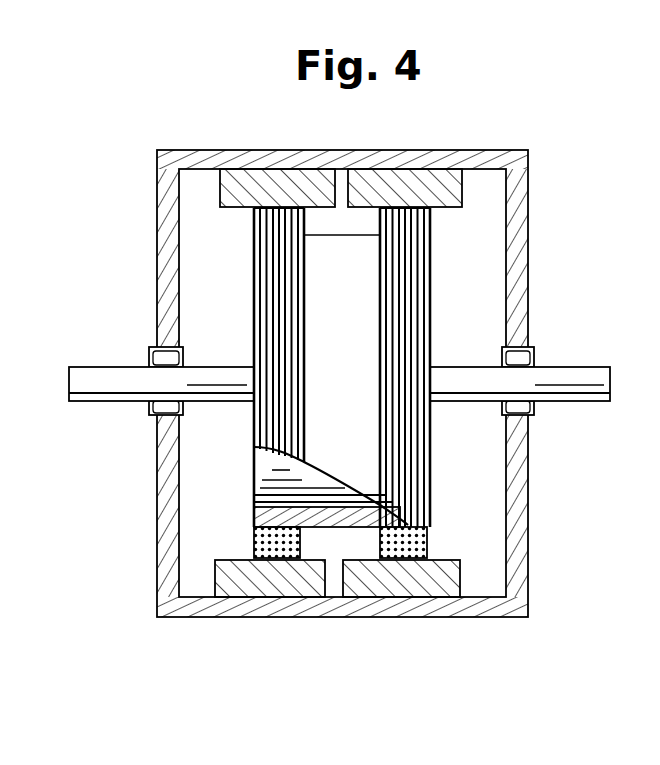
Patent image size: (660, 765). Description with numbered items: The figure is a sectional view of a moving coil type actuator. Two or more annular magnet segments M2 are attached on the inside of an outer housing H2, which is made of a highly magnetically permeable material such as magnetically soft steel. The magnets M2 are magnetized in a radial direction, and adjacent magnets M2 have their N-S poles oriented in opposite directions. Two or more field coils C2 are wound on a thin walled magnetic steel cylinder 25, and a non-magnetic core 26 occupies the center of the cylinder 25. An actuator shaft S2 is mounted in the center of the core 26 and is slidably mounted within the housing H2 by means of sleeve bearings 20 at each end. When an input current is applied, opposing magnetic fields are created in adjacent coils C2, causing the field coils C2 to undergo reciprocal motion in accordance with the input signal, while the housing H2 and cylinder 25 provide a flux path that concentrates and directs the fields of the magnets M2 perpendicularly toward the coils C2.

The annular magnet segments M2 is at (380, 173).
The actuator shaft S2 is at (583, 377).
The sleeve bearings 20 is at (532, 403).
The outer housing H2 is at (515, 470).
The thin walled magnetic steel cylinder 25 is at (400, 522).
The non-magnetic core 26 is at (267, 462).
The field coils C2 is at (376, 541).